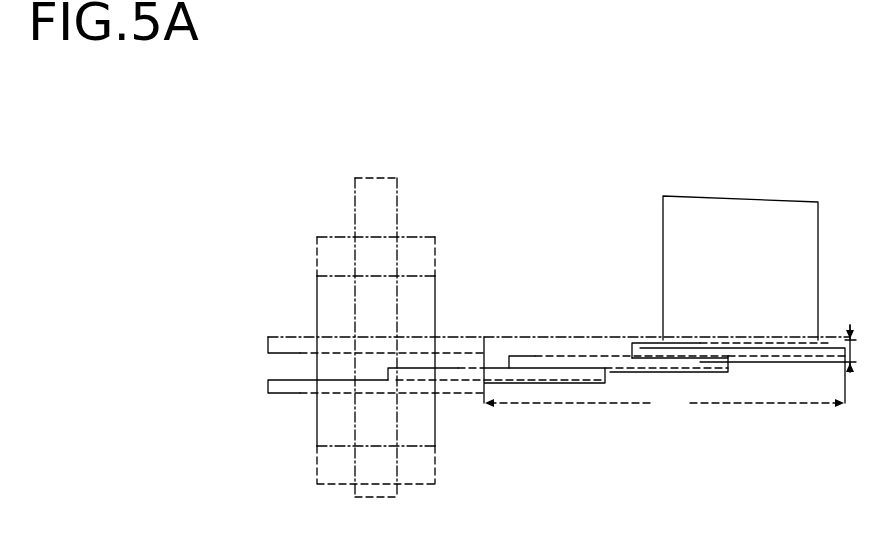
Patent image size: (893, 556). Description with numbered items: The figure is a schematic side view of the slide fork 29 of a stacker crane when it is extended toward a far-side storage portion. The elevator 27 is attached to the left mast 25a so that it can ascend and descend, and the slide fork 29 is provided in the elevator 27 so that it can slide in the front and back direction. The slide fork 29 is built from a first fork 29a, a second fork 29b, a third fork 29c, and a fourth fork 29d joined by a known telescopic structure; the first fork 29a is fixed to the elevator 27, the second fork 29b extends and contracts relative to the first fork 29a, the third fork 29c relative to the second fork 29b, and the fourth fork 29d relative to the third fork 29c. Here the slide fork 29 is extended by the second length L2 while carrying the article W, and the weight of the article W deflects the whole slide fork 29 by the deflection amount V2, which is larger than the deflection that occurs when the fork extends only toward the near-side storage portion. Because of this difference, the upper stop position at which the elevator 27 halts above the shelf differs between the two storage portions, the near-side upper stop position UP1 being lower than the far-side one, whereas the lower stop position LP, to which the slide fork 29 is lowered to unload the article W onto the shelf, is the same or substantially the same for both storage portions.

The left mast 25a is at (398, 187).
The elevator 27 is at (444, 247).
The lower stop position LP is at (353, 273).
The near-side upper stop position UP1 is at (397, 237).
The slide fork 29 is at (629, 384).
The first fork 29a is at (308, 379).
The second fork 29b is at (496, 365).
The third fork 29c is at (581, 348).
The fourth fork 29d is at (770, 362).
The article W is at (752, 291).
The deflection amount V2 is at (845, 334).
The second length L2 is at (664, 390).